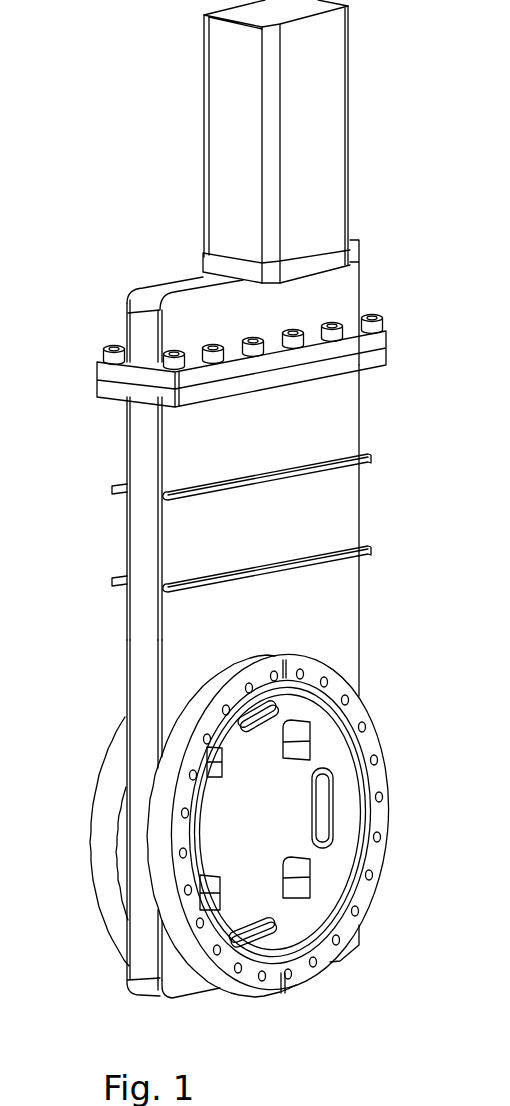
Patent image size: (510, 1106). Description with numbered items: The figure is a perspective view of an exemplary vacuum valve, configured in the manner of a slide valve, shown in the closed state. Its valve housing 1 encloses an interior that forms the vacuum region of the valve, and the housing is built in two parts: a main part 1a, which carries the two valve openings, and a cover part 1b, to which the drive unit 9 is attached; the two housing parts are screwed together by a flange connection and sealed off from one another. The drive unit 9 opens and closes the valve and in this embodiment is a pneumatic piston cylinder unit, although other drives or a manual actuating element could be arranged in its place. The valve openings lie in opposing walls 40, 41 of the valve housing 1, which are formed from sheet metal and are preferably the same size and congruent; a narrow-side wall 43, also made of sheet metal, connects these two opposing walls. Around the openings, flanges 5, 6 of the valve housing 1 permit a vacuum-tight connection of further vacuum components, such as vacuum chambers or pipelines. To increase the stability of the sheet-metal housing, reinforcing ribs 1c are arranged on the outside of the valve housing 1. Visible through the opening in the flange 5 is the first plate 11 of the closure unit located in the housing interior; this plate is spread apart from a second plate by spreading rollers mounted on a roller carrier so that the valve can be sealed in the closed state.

The valve housing 1 is at (373, 399).
The main part 1a is at (350, 448).
The cover part 1b is at (348, 290).
The reinforcing ribs 1c is at (372, 462).
The flange 5 is at (306, 974).
The flange 6 is at (117, 913).
The drive unit 9 is at (379, 92).
The first plate 11 is at (302, 774).
The wall 40 is at (350, 607).
The wall 41 is at (127, 630).
The narrow-side wall 43 is at (140, 787).